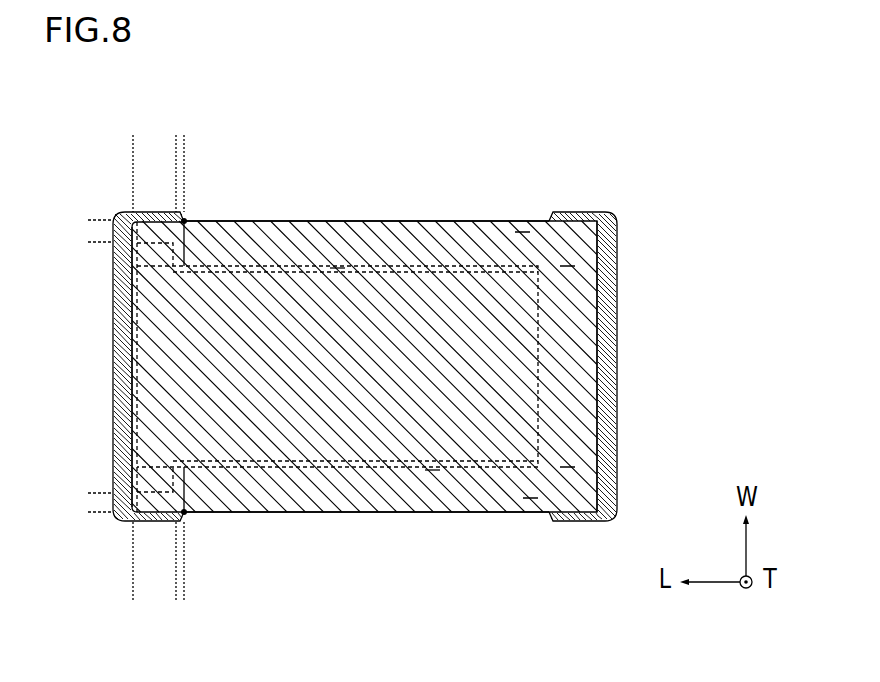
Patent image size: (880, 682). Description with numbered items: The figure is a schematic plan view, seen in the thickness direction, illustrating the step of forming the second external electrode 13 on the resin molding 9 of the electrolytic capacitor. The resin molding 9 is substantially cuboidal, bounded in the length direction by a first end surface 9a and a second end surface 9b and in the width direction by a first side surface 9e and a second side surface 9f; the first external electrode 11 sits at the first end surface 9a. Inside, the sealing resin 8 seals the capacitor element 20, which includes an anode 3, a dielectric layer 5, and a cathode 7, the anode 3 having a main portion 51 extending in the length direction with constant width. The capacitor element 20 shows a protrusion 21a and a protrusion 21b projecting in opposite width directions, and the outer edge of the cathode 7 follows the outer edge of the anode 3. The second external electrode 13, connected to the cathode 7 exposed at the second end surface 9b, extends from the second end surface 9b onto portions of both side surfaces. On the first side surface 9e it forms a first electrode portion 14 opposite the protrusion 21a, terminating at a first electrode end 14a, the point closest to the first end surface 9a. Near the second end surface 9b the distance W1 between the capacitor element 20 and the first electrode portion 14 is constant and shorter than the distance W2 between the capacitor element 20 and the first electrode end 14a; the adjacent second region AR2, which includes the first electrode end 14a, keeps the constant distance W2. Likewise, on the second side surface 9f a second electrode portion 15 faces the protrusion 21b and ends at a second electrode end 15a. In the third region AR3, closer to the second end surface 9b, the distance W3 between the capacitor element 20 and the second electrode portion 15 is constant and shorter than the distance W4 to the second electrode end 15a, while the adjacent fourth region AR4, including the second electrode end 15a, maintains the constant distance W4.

The resin molding 9 is at (450, 216).
The second external electrode 13 is at (118, 325).
The first external electrode 11 is at (608, 256).
The second electrode portion 15 is at (147, 210).
The first electrode portion 14 is at (147, 523).
The second electrode end 15a is at (187, 218).
The first electrode end 14a is at (186, 520).
The second side surface 9f is at (313, 220).
The first side surface 9e is at (376, 513).
The second end surface 9b is at (130, 385).
The first end surface 9a is at (612, 395).
The anode 3 is at (580, 348).
The cathode 7 is at (330, 465).
The protrusion 21a is at (133, 453).
The protrusion 21b is at (133, 282).
The main portion 51 is at (338, 308).
The dielectric layer 5 is at (564, 264).
The sealing resin 8 is at (522, 232).
The capacitor element 20 is at (432, 470).
The second region AR2 is at (133, 600).
The third region AR3 is at (215, 142).
The fourth region AR4 is at (187, 135).
The distance W1 is at (98, 472).
The distance W2 is at (206, 489).
The distance W3 is at (98, 200).
The distance W4 is at (206, 244).